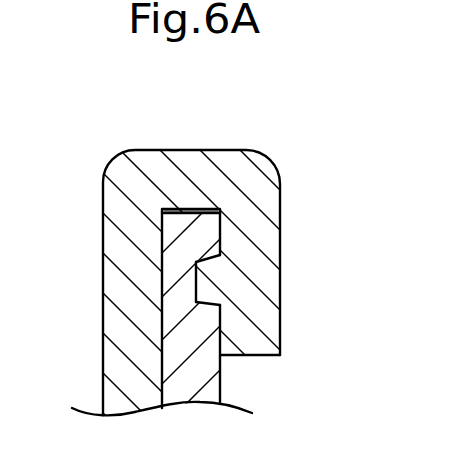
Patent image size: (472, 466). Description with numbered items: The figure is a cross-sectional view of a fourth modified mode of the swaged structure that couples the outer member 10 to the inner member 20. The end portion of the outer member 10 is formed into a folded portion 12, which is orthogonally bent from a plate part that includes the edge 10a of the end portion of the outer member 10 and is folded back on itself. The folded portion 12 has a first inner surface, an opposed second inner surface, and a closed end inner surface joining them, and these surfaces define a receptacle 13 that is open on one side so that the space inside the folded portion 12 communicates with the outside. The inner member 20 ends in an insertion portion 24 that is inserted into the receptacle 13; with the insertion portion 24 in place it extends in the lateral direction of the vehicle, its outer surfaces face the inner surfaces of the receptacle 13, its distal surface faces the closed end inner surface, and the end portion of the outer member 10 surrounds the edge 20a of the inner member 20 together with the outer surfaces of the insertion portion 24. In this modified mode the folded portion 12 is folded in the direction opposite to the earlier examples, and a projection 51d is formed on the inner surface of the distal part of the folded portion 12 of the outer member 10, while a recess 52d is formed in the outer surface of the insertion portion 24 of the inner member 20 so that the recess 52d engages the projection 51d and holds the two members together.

The outer member 10 is at (80, 330).
The edge 10a is at (252, 355).
The folded portion 12 is at (121, 173).
The receptacle 13 is at (222, 347).
The inner member 20 is at (233, 386).
The edge 20a is at (192, 210).
The insertion portion 24 is at (178, 275).
The projection 51d is at (208, 273).
The recess 52d is at (211, 298).